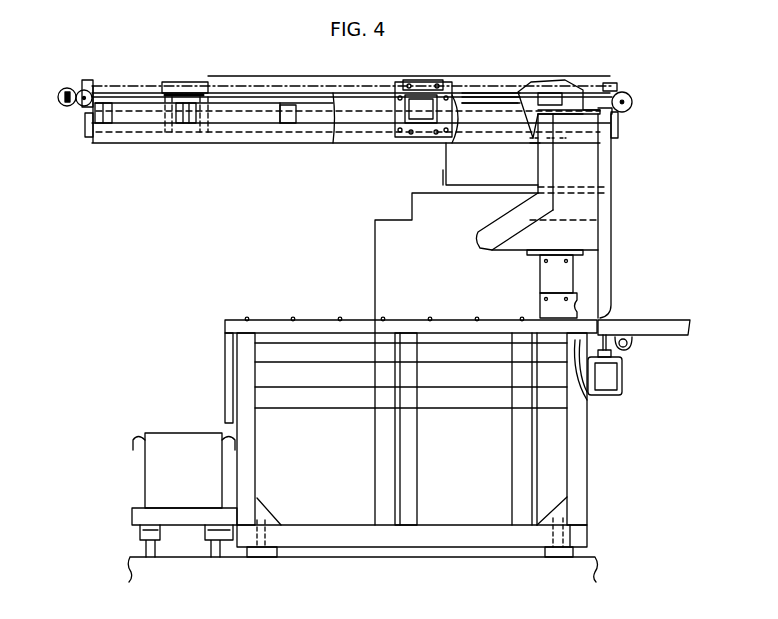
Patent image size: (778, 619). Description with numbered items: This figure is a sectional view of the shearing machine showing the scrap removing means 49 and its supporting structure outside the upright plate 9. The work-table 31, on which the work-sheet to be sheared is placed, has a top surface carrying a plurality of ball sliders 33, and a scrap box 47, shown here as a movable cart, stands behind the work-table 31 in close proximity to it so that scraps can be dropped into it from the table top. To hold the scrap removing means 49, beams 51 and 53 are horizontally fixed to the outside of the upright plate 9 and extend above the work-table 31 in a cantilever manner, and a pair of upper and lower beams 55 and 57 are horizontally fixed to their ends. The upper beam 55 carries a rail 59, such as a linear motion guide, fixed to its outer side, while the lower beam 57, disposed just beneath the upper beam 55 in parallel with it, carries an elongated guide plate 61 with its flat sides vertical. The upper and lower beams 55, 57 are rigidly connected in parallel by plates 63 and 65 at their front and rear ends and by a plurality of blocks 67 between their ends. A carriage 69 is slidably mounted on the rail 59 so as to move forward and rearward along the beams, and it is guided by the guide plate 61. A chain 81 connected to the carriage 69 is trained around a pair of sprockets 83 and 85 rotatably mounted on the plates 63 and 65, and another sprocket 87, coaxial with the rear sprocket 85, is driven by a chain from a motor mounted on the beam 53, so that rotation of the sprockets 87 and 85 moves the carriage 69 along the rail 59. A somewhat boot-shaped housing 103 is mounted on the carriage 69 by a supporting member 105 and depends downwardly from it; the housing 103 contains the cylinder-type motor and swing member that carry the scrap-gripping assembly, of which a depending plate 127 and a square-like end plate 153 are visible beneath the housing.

The upright plate 9 is at (165, 100).
The work-table 31 is at (262, 322).
The ball sliders 33 is at (293, 318).
The scrap box 47 is at (152, 473).
The scrap removing means 49 is at (206, 150).
The beam 51 is at (423, 125).
The beam 53 is at (194, 96).
The upper beam 55 is at (288, 95).
The lower beam 57 is at (320, 135).
The rail 59 is at (482, 100).
The guide plate 61 is at (291, 145).
The plate 63 is at (620, 126).
The plate 65 is at (85, 134).
The blocks 67 is at (102, 125).
The carriage 69 is at (528, 92).
The chain 81 is at (118, 87).
The sprocket 83 is at (630, 93).
The sprocket 85 is at (80, 105).
The sprocket 87 is at (62, 90).
The housing 103 is at (600, 160).
The supporting member 105 is at (545, 98).
The plate 127 is at (543, 272).
The plate 153 is at (548, 304).